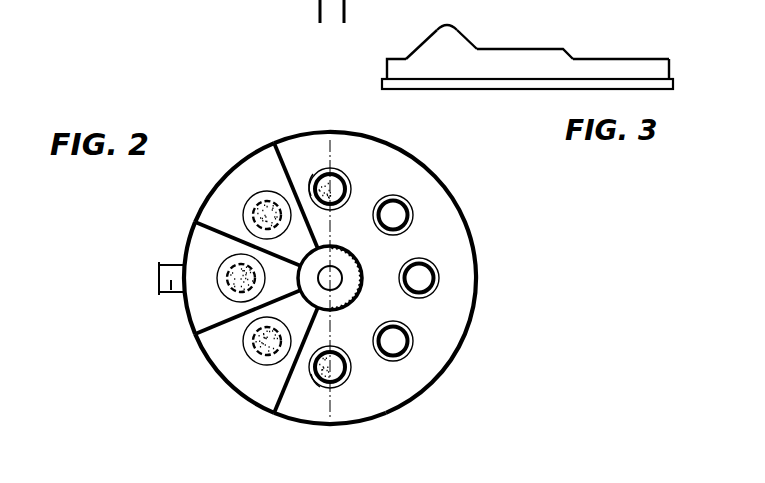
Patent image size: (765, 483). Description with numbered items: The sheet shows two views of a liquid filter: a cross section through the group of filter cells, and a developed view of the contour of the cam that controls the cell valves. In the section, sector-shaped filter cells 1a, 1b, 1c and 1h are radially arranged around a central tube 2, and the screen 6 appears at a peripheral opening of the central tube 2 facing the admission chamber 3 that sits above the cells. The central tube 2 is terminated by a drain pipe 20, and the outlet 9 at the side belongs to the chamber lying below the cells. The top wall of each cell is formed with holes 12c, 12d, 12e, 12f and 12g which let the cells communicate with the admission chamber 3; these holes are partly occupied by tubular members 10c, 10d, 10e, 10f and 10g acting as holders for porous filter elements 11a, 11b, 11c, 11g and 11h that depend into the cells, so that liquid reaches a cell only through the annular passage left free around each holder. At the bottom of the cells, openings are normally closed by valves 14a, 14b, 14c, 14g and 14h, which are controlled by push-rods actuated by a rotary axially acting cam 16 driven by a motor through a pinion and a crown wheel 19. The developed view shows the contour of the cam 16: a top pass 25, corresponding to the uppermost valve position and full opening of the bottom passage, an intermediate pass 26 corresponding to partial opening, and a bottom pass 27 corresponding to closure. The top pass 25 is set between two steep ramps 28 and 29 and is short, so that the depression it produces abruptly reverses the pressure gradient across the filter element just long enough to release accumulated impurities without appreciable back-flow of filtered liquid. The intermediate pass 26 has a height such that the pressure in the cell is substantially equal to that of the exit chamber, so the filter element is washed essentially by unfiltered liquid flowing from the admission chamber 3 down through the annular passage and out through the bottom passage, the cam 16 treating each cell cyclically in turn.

In FIG. 2, the central tube 2 is at (318, 262).
In FIG. 2, the admission chamber 3 is at (445, 209).
In FIG. 2, the screen 6 is at (362, 268).
In FIG. 2, the outlet 9 is at (158, 273).
In FIG. 2, the drain pipe 20 is at (341, 281).
In FIG. 2, the filter cell 1a is at (195, 220).
In FIG. 2, the filter cell 1b is at (210, 343).
In FIG. 2, the filter cell 1c is at (287, 407).
In FIG. 2, the filter cell 1h is at (212, 190).
In FIG. 2, the tubular member 10c is at (347, 372).
In FIG. 2, the tubular member 10d is at (405, 338).
In FIG. 2, the tubular member 10e is at (432, 266).
In FIG. 2, the tubular member 10f is at (404, 202).
In FIG. 2, the tubular member 10g is at (342, 172).
In FIG. 2, the porous filter element 11a is at (228, 275).
In FIG. 2, the porous filter element 11b is at (260, 352).
In FIG. 2, the porous filter element 11c is at (312, 377).
In FIG. 2, the porous filter element 11g is at (321, 182).
In FIG. 2, the porous filter element 11h is at (263, 206).
In FIG. 2, the hole 12c is at (333, 382).
In FIG. 2, the hole 12d is at (403, 353).
In FIG. 2, the hole 12e is at (437, 279).
In FIG. 2, the hole 12f is at (403, 207).
In FIG. 2, the hole 12g is at (345, 176).
In FIG. 2, the valve 14a is at (221, 293).
In FIG. 2, the valve 14b is at (251, 359).
In FIG. 2, the valve 14c is at (320, 384).
In FIG. 2, the valve 14g is at (308, 175).
In FIG. 2, the valve 14h is at (247, 205).
In FIG. 3, the rotary axially acting cam 16 is at (395, 72).
In FIG. 3, the crown wheel 19 is at (512, 83).
In FIG. 3, the top pass 25 is at (448, 26).
In FIG. 3, the intermediate pass 26 is at (528, 49).
In FIG. 3, the bottom pass 27 is at (610, 59).
In FIG. 3, the steep ramp 28 is at (421, 45).
In FIG. 3, the steep ramp 29 is at (468, 38).